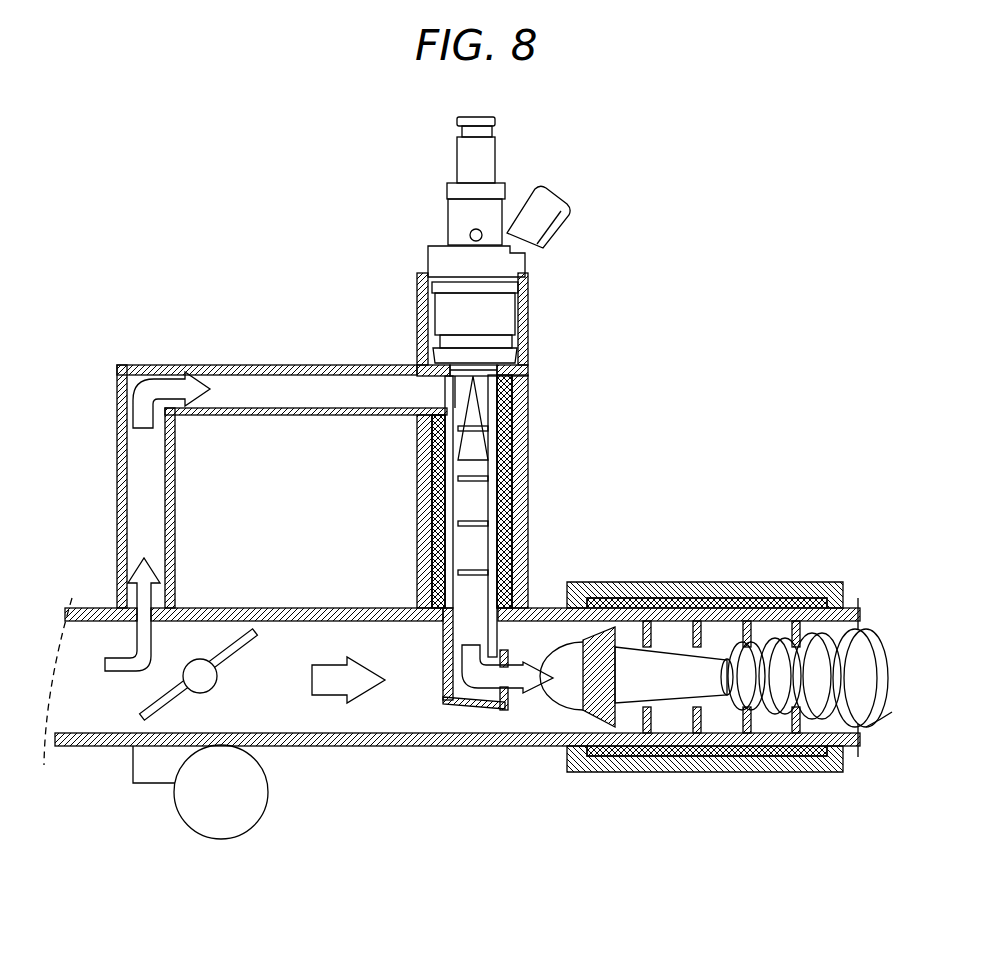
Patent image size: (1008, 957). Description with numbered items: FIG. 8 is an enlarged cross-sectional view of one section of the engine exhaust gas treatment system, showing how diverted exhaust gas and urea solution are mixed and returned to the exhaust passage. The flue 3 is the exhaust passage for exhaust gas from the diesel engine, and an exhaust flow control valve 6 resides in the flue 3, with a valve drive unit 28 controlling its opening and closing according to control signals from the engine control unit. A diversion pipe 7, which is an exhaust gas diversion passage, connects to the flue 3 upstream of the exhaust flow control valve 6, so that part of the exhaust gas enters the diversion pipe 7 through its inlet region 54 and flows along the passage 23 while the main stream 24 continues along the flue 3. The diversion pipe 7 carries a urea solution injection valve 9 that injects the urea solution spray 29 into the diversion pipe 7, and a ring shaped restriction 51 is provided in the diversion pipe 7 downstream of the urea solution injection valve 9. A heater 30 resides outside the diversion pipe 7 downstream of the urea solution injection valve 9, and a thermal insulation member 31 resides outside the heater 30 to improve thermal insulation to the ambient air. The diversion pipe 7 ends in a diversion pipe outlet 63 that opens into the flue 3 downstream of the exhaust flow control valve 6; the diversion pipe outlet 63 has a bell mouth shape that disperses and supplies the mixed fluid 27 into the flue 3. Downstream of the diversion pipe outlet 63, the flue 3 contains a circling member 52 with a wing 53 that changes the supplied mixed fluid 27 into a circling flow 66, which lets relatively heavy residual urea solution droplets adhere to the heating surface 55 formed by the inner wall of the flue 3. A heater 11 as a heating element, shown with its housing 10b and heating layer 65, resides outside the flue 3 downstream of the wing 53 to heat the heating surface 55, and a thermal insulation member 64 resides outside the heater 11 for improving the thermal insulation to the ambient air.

The flue 3 is at (385, 718).
The exhaust flow control valve 6 is at (238, 628).
The diversion pipe 7 is at (303, 454).
The urea solution injection valve 9 is at (543, 212).
The housing 10b is at (708, 555).
The heater 11 is at (682, 603).
The air intake tube 23 is at (117, 670).
The intake air flow 24 is at (335, 683).
The mixed fluid 27 is at (450, 700).
The valve drive unit 28 is at (220, 808).
The urea solution spray 29 is at (477, 425).
The heater 30 is at (512, 432).
The thermal insulation member 31 is at (525, 460).
The ring shaped restriction 51 is at (470, 568).
The circling member 52 is at (632, 692).
The wing 53 is at (598, 720).
The air passage 54 is at (117, 598).
The heating surface 55 is at (667, 725).
The diversion pipe outlet 63 is at (502, 707).
The thermal insulation member 64 is at (823, 583).
The heater layer 65 is at (728, 610).
The circling flow 66 is at (860, 730).